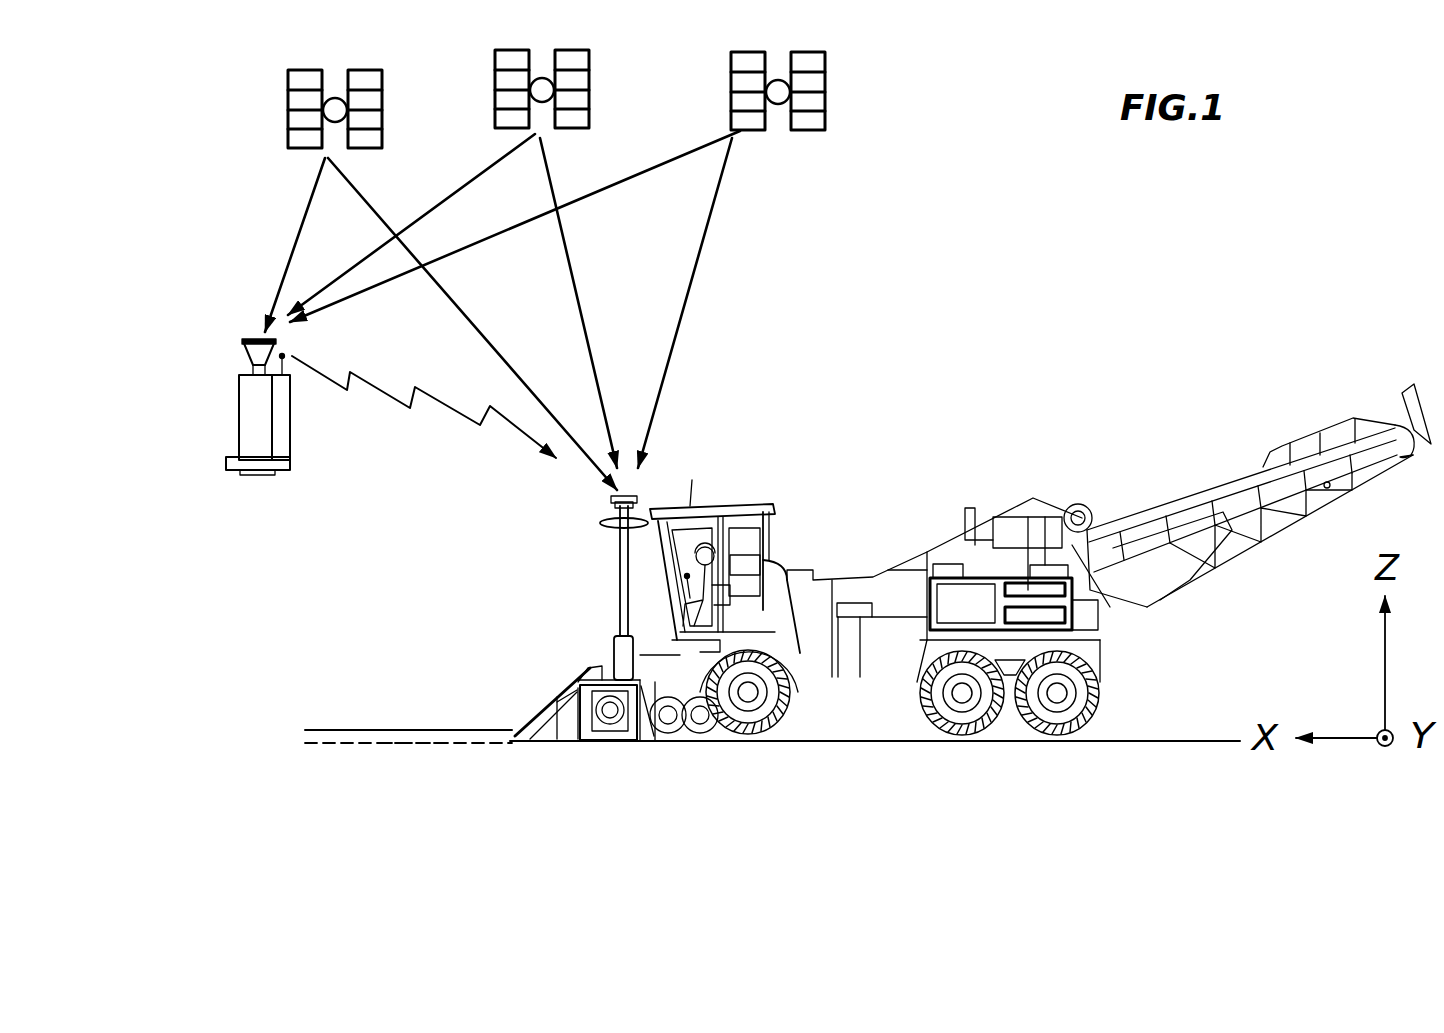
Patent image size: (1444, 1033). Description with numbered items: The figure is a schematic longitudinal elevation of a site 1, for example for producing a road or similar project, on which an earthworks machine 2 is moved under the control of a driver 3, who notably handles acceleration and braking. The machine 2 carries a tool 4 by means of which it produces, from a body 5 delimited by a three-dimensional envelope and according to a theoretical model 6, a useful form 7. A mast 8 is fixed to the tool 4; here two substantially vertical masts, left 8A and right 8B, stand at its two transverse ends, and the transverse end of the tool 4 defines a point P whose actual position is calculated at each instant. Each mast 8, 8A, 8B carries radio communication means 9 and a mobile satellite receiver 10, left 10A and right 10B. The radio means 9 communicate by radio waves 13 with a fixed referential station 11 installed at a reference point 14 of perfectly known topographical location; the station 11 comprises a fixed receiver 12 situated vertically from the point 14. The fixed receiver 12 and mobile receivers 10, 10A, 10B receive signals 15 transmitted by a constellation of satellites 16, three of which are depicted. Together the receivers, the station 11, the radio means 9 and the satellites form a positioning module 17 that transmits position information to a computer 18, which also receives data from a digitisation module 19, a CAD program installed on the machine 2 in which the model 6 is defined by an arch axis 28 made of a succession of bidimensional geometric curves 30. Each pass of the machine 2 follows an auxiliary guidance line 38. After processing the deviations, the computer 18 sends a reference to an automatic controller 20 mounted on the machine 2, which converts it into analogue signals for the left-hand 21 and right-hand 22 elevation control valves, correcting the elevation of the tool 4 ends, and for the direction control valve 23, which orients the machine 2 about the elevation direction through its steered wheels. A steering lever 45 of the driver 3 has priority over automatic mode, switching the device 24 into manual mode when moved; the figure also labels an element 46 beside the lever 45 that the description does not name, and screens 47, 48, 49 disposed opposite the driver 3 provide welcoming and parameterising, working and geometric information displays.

The site 1 is at (1158, 302).
The earthworks machine 2 is at (907, 552).
The driver 3 is at (708, 522).
The tool 4 is at (553, 672).
The body 5 is at (352, 724).
The theoretical model 6 is at (318, 750).
The useful form 7 is at (834, 746).
The mast 8 is at (546, 591).
The left mast 8A is at (546, 591).
The right mast 8B is at (606, 618).
The radio communication means 9 is at (598, 500).
The mobile receiver 10 is at (515, 522).
The left mobile receiver 10A is at (515, 522).
The right mobile receiver 10B is at (596, 522).
The fixed referential station 11 is at (240, 397).
The fixed global positioning by satellite receiver 12 is at (236, 352).
The radio waves 13 is at (385, 397).
The reference point 14 is at (255, 480).
The signals 15 is at (296, 210).
The constellation of satellites 16 is at (848, 76).
The positioning module 17 is at (762, 278).
The computer 18 is at (948, 562).
The digitisation module 19 is at (1033, 585).
The automatic controller 20 is at (1088, 612).
The left-hand elevation control valve 21 is at (716, 746).
The right-hand elevation control valve 22 is at (716, 746).
The direction control valve 23 is at (642, 742).
The device 24 is at (968, 282).
The arch axis 28 is at (456, 770).
The bidimensional geometric curves 30 is at (376, 754).
The auxiliary guidance line 38 is at (400, 754).
The steering lever 45 is at (805, 487).
The input unit 46 is at (786, 536).
The welcoming and parameterising screen 47 is at (791, 407).
The working screen 48 is at (791, 407).
The geometric information screen 49 is at (690, 484).
The point P is at (627, 738).